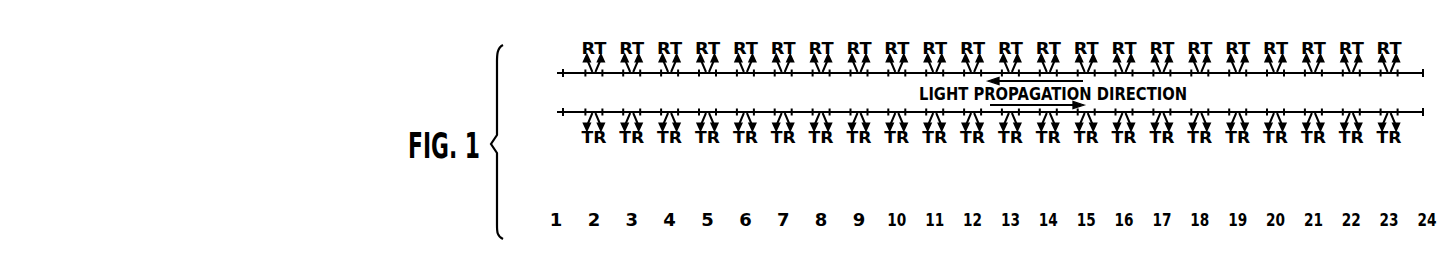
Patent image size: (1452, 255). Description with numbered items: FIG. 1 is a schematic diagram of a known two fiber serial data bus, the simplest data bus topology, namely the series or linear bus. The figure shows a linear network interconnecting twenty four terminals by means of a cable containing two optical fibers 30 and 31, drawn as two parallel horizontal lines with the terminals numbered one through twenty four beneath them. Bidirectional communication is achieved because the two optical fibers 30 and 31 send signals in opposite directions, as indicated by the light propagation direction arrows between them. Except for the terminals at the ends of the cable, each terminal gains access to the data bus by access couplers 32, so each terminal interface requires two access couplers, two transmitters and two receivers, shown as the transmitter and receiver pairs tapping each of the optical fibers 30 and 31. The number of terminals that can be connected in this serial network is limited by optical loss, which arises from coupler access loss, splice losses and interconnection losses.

The optical fiber 30 is at (573, 74).
The optical fiber 31 is at (573, 113).
The access coupler 32 is at (668, 118).